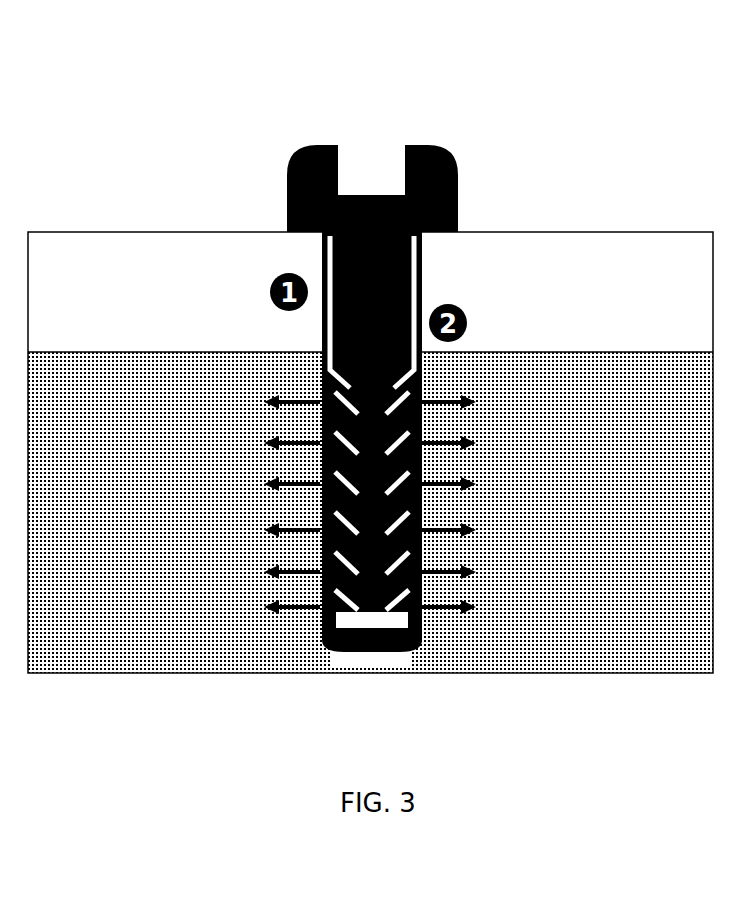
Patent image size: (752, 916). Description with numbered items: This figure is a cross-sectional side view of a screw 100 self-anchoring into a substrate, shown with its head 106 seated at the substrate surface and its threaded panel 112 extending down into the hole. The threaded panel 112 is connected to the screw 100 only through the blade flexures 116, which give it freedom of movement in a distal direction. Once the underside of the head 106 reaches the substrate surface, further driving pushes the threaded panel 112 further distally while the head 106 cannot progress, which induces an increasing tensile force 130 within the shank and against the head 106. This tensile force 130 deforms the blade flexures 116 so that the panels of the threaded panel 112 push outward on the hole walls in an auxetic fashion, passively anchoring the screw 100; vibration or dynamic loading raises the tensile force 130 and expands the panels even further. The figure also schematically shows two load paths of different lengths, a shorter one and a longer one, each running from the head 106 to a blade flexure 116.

The screw 100 is at (147, 80).
The head 106 is at (422, 168).
The threaded panel 112 is at (327, 613).
The blade flexure 116 is at (400, 612).
The tensile force 130 is at (370, 237).